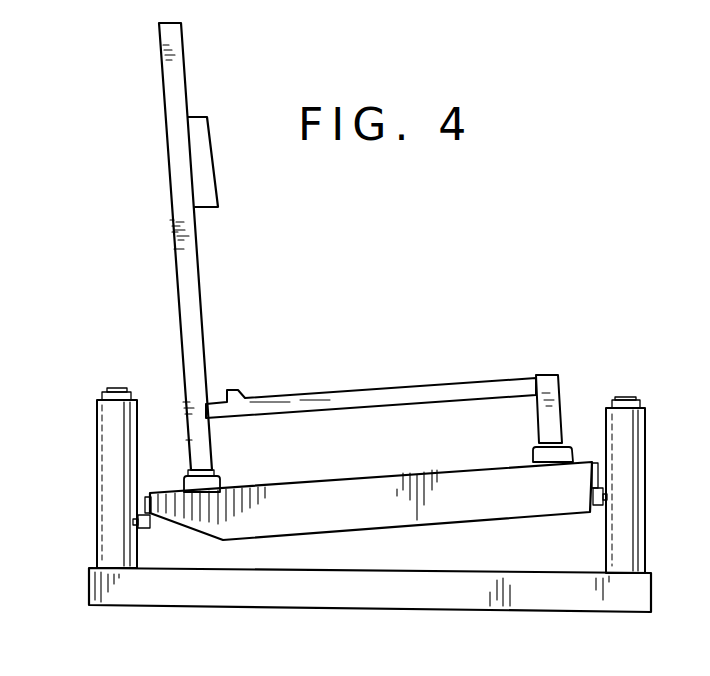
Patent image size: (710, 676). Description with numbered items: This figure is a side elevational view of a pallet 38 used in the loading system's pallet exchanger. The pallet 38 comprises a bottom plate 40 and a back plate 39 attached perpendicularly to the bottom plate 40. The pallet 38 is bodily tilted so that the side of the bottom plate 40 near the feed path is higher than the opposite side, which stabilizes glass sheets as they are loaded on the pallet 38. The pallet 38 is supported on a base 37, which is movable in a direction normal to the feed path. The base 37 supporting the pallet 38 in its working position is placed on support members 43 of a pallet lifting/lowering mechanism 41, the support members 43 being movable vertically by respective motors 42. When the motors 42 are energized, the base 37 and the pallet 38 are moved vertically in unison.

The base 37 is at (393, 487).
The pallet 38 is at (172, 255).
The back plate 39 is at (185, 83).
The bottom plate 40 is at (325, 398).
The pallet lifting/lowering mechanism 41 is at (96, 420).
The motor 42 is at (112, 495).
The support member 43 is at (148, 532).